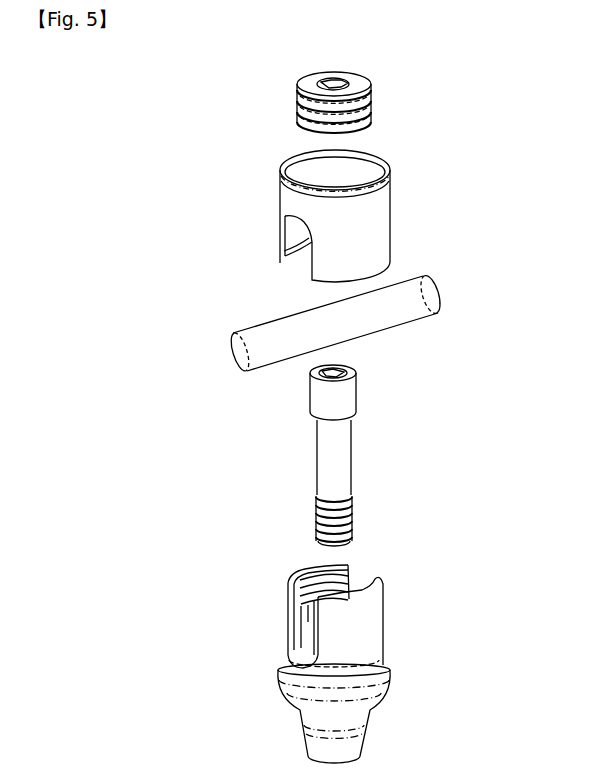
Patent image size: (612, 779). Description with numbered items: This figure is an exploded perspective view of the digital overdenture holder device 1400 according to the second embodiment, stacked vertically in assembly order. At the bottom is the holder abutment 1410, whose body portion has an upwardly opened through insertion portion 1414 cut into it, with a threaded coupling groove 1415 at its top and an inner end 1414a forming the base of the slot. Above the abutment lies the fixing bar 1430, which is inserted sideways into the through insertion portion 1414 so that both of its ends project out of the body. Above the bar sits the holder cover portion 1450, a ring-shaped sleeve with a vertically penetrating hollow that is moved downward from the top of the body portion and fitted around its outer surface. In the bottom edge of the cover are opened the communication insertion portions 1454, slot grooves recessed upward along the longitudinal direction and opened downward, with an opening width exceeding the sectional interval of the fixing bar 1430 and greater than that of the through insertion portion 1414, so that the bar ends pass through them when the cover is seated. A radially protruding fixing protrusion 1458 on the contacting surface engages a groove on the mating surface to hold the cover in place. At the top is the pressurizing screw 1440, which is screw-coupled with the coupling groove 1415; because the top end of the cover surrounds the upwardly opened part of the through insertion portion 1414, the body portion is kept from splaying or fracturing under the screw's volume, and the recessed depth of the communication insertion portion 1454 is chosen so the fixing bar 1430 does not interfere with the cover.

The digital overdenture holder device 1400 is at (122, 341).
The pressurizing screw 1440 is at (294, 100).
The holder cover portion 1450 is at (314, 235).
The communication insertion portion 1454 is at (303, 224).
The fixing protrusion 1458 is at (284, 264).
The fixing bar 1430 is at (397, 325).
The holder abutment 1410 is at (317, 644).
The through insertion portion 1414 is at (318, 641).
The inner end of the through insertion portion 1414a is at (305, 660).
The coupling groove 1415 is at (314, 567).